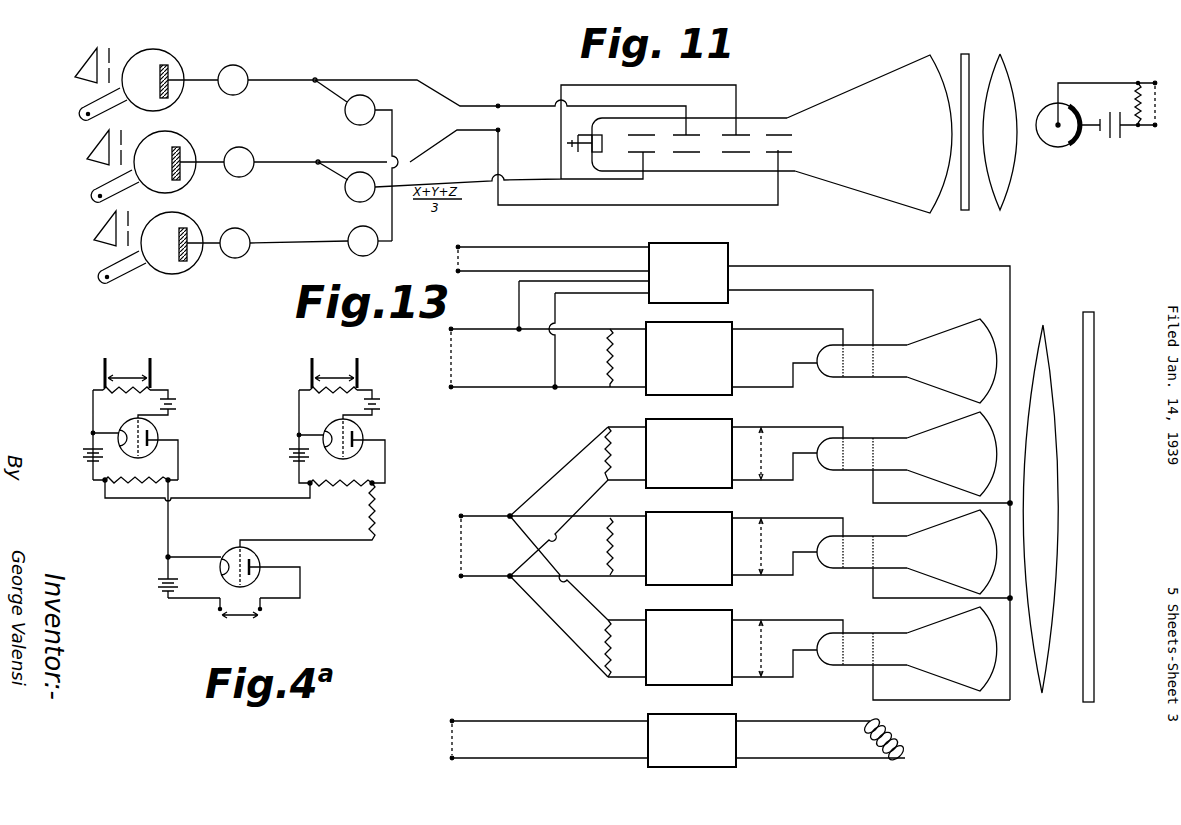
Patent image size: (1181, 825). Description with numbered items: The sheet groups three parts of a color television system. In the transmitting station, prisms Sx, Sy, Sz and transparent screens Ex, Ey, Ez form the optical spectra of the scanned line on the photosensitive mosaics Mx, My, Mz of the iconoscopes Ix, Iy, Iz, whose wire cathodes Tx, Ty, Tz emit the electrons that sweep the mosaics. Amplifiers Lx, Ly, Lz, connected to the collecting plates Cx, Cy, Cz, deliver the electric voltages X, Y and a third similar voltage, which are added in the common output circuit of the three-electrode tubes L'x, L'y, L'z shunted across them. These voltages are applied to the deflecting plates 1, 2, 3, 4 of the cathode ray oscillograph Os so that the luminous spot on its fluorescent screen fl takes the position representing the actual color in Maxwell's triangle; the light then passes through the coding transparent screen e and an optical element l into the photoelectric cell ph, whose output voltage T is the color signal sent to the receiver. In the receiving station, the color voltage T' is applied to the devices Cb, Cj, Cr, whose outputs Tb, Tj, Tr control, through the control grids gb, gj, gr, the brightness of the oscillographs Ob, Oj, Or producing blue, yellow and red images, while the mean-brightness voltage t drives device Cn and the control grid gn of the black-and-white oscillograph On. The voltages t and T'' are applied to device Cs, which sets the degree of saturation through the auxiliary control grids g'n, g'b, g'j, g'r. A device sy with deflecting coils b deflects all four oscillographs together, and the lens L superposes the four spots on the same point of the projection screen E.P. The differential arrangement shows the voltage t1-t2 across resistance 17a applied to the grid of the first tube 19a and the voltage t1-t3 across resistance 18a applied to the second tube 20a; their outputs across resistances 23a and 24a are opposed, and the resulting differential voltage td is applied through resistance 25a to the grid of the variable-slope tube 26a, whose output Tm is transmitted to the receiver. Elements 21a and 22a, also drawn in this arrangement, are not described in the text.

In FIG. 11, the deflecting plate 1 is at (641, 143).
In FIG. 11, the deflecting plate 2 is at (686, 143).
In FIG. 11, the deflecting plate 3 is at (736, 143).
In FIG. 11, the deflecting plate 4 is at (779, 143).
In FIG. 4A, the resistance 17a is at (126, 398).
In FIG. 4A, the resistance 18a is at (333, 398).
In FIG. 4A, the first three electrode vacuum tube 19a is at (160, 433).
In FIG. 4A, the second three electrode vacuum tube 20a is at (341, 451).
In FIG. 4A, the battery 21a is at (177, 405).
In FIG. 4A, the battery 22a is at (381, 406).
In FIG. 4A, the resistance 23a is at (149, 480).
In FIG. 4A, the resistance 24a is at (346, 482).
In FIG. 4A, the resistance 25a is at (368, 515).
In FIG. 4A, the third vacuum tube 26a is at (263, 560).
In FIG. 4A, the differential voltage td is at (232, 550).
In FIG. 4A, the output of tube 26a Tm is at (239, 607).
In FIG. 4A, the differential electric voltage t1-t2 is at (127, 373).
In FIG. 4A, the differential electric voltage t1-t3 is at (334, 373).
In FIG. 11, the prism Sx is at (74, 65).
In FIG. 11, the prism Sy is at (80, 147).
In FIG. 11, the prism Sz is at (84, 228).
In FIG. 11, the transparent screen Ex is at (111, 56).
In FIG. 11, the transparent screen Ey is at (124, 138).
In FIG. 11, the transparent screen Ez is at (128, 218).
In FIG. 11, the iconoscope Ix is at (153, 71).
In FIG. 11, the iconoscope Iy is at (165, 153).
In FIG. 11, the iconoscope Iz is at (172, 234).
In FIG. 11, the photosensitive mosaic Mx is at (140, 82).
In FIG. 11, the photosensitive mosaic My is at (152, 164).
In FIG. 11, the photosensitive mosaic Mz is at (159, 245).
In FIG. 11, the collecting plate Cx is at (175, 81).
In FIG. 11, the collecting plate Cy is at (187, 163).
In FIG. 11, the collecting plate Cz is at (194, 244).
In FIG. 11, the cathode Tx is at (89, 104).
In FIG. 11, the cathode Ty is at (95, 186).
In FIG. 11, the cathode Tz is at (99, 268).
In FIG. 11, the amplifier Lx is at (233, 72).
In FIG. 11, the amplifier Ly is at (239, 154).
In FIG. 11, the amplifier Lz is at (235, 235).
In FIG. 11, the three-electrode vacuum tube L'x is at (355, 159).
In FIG. 11, the three-electrode vacuum tube L'y is at (526, 143).
In FIG. 11, the three-electrode vacuum tube L'z is at (361, 248).
In FIG. 11, the electric voltage X is at (496, 97).
In FIG. 11, the electric voltage Y is at (504, 128).
In FIG. 11, the cathode ray oscillograph Os is at (869, 137).
In FIG. 11, the fluorescent screen fl is at (941, 170).
In FIG. 11, the coding transparent screen e is at (964, 142).
In FIG. 11, the lens l is at (1000, 141).
In FIG. 11, the photoelectric cell ph is at (1095, 125).
In FIG. 11, the electric voltage T is at (1153, 104).
In FIG. 13, the electric voltage T'' is at (540, 259).
In FIG. 13, the electric voltage t is at (540, 358).
In FIG. 13, the electric voltage T' is at (542, 546).
In FIG. 13, the device Cs is at (764, 471).
In FIG. 13, the device Cn is at (744, 358).
In FIG. 13, the device Cb is at (744, 453).
In FIG. 13, the device Cj is at (744, 548).
In FIG. 13, the device Cr is at (744, 647).
In FIG. 13, the terminals b Tb is at (769, 453).
In FIG. 13, the terminals j Tj is at (768, 546).
In FIG. 13, the terminals r Tr is at (769, 648).
In FIG. 13, the control grid gn is at (862, 361).
In FIG. 13, the auxiliary control grid g'n is at (889, 360).
In FIG. 13, the control grid gb is at (914, 471).
In FIG. 13, the auxiliary control grid g'b is at (889, 455).
In FIG. 13, the control grid gj is at (914, 568).
In FIG. 13, the auxiliary control grid g'j is at (887, 553).
In FIG. 13, the control grid gr is at (913, 666).
In FIG. 13, the auxiliary control grid g'r is at (888, 650).
In FIG. 13, the cathode ray oscillograph On is at (952, 361).
In FIG. 13, the cathode ray oscillograph Ob is at (952, 454).
In FIG. 13, the cathode ray oscillograph Oj is at (952, 552).
In FIG. 13, the cathode ray oscillograph Or is at (952, 649).
In FIG. 13, the lens L is at (1040, 524).
In FIG. 13, the projection screen E.P is at (1096, 519).
In FIG. 13, the device sy is at (776, 740).
In FIG. 13, the deflecting coils b is at (886, 739).